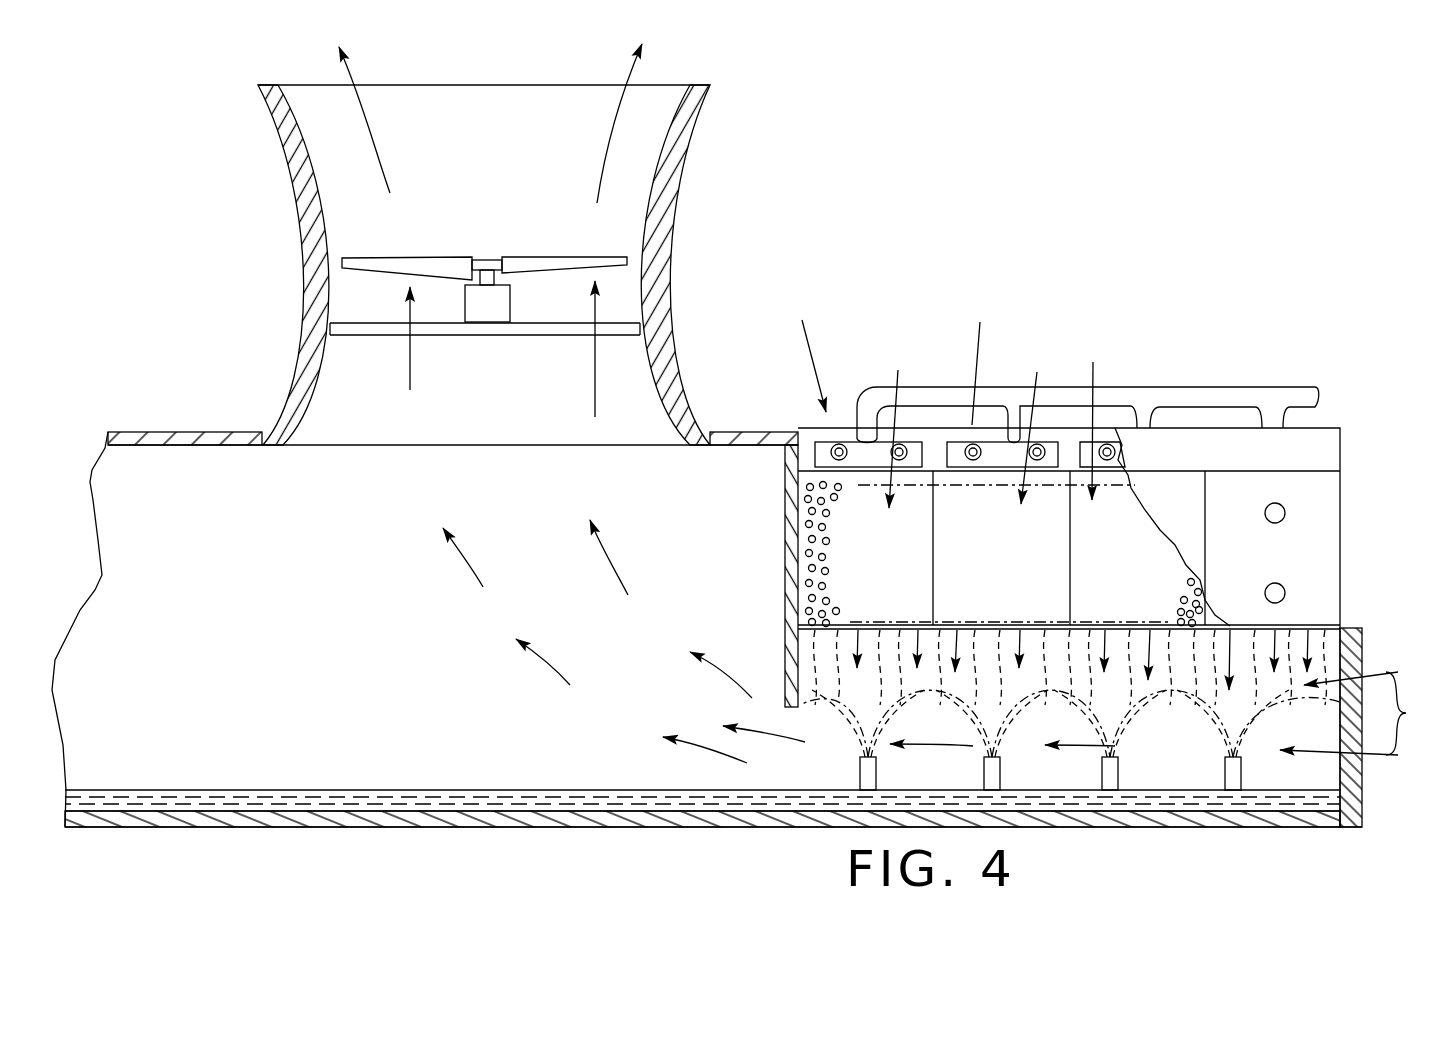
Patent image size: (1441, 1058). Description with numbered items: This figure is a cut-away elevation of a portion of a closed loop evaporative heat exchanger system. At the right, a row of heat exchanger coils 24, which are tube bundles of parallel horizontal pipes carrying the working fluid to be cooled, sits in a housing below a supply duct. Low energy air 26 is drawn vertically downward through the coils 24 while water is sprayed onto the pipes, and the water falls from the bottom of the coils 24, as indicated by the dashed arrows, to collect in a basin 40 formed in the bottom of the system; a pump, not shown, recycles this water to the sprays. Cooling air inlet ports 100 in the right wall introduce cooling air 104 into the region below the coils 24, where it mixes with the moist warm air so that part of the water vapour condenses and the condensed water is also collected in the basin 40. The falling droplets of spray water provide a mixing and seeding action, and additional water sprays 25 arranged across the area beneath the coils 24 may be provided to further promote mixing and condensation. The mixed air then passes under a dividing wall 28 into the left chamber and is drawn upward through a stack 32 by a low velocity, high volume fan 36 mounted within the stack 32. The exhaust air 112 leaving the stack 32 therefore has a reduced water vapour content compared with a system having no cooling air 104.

The heat exchanger coils 24 is at (895, 567).
The additional water sprays 25 is at (862, 768).
The low energy air 26 is at (899, 370).
The dividing wall 28 is at (785, 650).
The stack 32 is at (672, 190).
The fan 36 is at (551, 258).
The basin 40 is at (393, 783).
The cooling air inlet ports 100 is at (1342, 748).
The cooling air 104 is at (1358, 713).
The exhaust air 112 is at (622, 372).